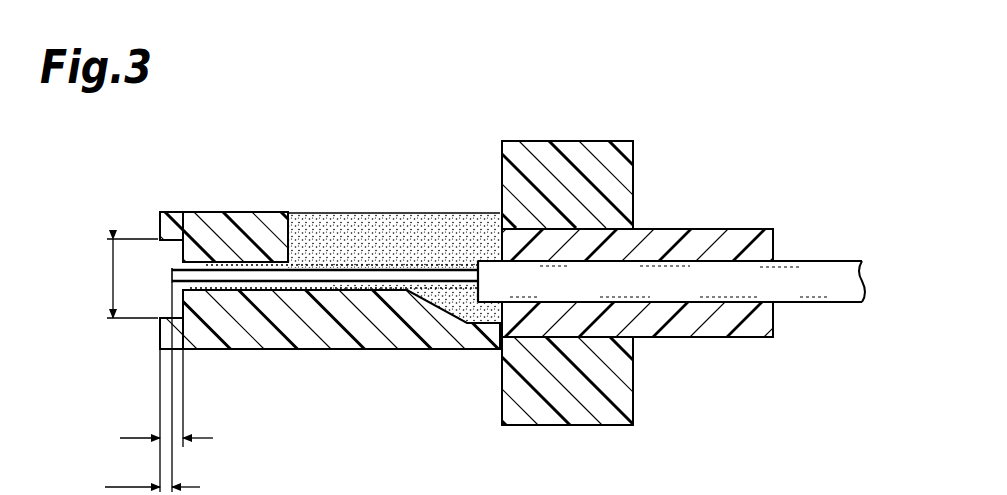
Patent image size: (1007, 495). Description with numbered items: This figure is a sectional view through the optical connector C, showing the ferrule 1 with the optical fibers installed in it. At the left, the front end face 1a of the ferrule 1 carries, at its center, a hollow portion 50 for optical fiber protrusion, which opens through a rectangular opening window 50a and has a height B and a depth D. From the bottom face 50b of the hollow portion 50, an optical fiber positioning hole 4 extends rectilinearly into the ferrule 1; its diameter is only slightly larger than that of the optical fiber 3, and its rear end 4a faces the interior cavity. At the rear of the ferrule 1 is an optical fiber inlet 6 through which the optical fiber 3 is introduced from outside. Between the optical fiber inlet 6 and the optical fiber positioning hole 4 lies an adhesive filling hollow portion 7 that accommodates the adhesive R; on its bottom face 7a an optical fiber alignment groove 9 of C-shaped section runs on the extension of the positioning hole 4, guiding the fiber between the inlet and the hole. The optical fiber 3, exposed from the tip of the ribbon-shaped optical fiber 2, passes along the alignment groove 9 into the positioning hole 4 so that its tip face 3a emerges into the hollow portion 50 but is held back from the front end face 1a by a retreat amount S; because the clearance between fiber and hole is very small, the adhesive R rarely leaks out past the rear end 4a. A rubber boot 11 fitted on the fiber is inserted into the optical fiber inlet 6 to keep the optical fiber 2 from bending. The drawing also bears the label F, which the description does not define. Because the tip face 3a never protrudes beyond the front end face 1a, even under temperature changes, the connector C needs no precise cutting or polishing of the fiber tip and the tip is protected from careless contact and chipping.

The ferrule 1 is at (264, 210).
The front end face 1a is at (156, 230).
The ribbon-shaped optical fiber 2 is at (825, 256).
The optical fiber 3 is at (305, 352).
The tip face 3a is at (171, 277).
The optical fiber positioning hole 4 is at (226, 325).
The rear end 4a is at (291, 265).
The optical fiber inlet 6 is at (624, 236).
The adhesive filling hollow portion 7 is at (304, 230).
The bottom face 7a is at (357, 296).
The optical fiber alignment groove 9 is at (385, 294).
The boot 11 is at (710, 238).
The hollow portion 50 is at (175, 258).
The rectangular opening window 50a is at (158, 319).
The bottom face 50b is at (176, 212).
The optical connector C is at (650, 160).
The adhesive R is at (396, 234).
The optical fiber F is at (724, 296).
The height B is at (125, 278).
The depth D is at (166, 420).
The retreat amount S is at (152, 387).